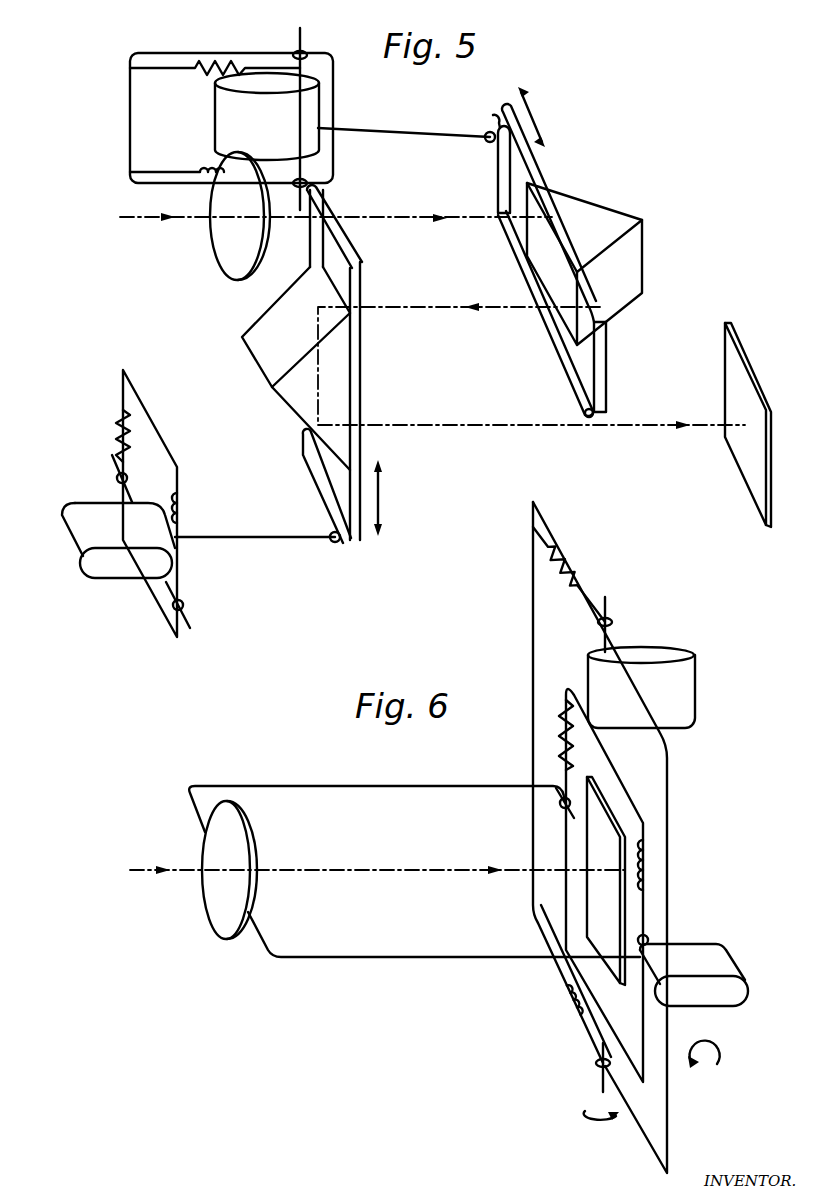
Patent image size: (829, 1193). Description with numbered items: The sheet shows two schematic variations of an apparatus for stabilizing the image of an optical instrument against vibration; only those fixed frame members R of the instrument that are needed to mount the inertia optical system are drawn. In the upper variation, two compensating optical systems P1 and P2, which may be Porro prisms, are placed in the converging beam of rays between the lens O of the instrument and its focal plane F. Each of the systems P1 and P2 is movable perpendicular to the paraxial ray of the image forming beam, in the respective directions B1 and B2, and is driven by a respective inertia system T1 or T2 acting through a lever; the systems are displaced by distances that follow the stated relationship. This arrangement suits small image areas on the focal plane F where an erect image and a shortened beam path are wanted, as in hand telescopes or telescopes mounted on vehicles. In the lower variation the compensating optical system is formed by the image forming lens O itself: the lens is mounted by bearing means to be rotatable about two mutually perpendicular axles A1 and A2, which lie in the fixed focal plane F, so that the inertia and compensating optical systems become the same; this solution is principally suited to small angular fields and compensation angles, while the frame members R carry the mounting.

In FIG. 5, the frame members R is at (132, 118).
In FIG. 6, the frame members R is at (671, 818).
In FIG. 5, the inertia system T1 is at (237, 118).
In FIG. 6, the inertia system T1 is at (688, 960).
In FIG. 5, the inertia system T2 is at (105, 538).
In FIG. 6, the inertia system T2 is at (650, 680).
In FIG. 5, the direction of movement B1 is at (550, 264).
In FIG. 5, the direction of movement B2 is at (333, 379).
In FIG. 5, the compensating optical system P1 is at (590, 230).
In FIG. 5, the compensating optical system P2 is at (282, 360).
In FIG. 5, the lens O is at (230, 248).
In FIG. 6, the lens O is at (223, 897).
In FIG. 5, the focal plane F is at (740, 403).
In FIG. 6, the focal plane F is at (606, 881).
In FIG. 6, the axle A1 is at (613, 900).
In FIG. 6, the axle A2 is at (596, 838).